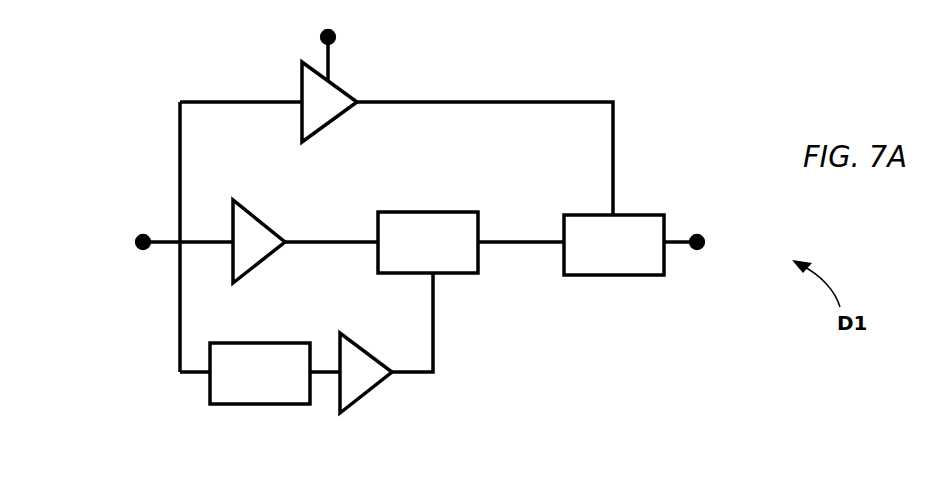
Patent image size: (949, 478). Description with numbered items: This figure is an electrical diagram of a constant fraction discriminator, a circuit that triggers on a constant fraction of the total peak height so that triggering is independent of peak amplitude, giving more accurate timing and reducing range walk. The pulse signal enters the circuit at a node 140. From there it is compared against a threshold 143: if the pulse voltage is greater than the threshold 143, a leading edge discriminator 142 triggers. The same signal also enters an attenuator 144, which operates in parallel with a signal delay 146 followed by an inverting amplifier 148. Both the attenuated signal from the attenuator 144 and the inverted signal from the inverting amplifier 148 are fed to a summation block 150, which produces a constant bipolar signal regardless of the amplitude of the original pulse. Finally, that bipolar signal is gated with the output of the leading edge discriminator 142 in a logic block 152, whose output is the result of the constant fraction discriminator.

The node 140 is at (143, 234).
The leading edge discriminator 142 is at (340, 118).
The threshold 143 is at (336, 42).
The attenuator 144 is at (253, 218).
The signal delay 146 is at (297, 343).
The inverting amplifier 148 is at (372, 387).
The summation block 150 is at (447, 211).
The logic block 152 is at (637, 214).